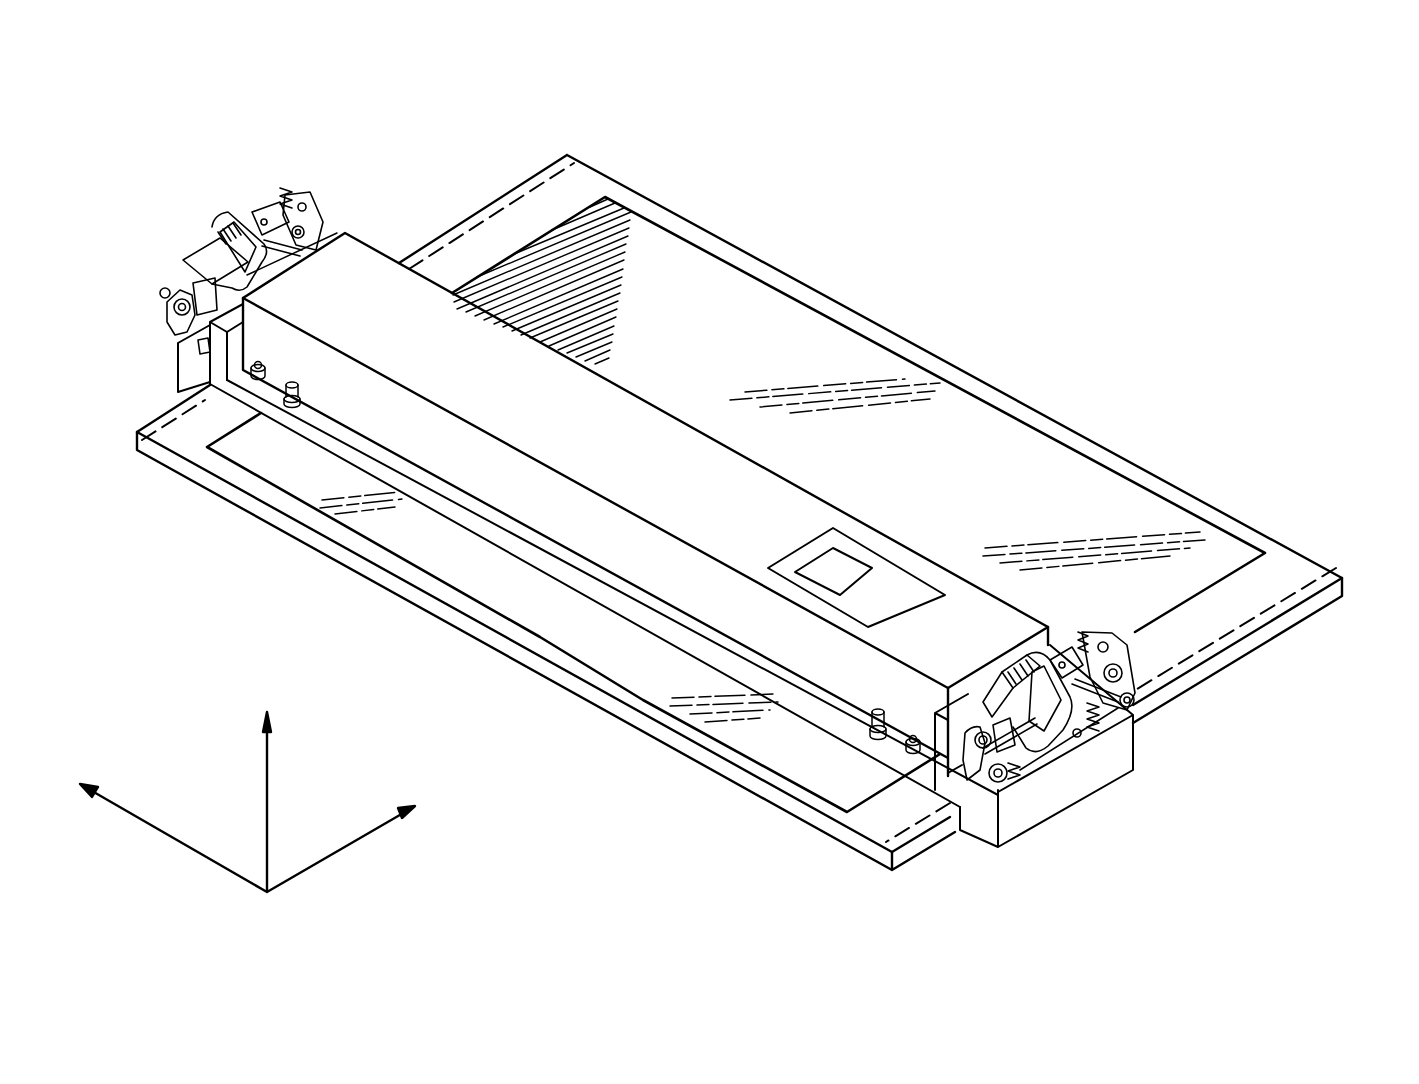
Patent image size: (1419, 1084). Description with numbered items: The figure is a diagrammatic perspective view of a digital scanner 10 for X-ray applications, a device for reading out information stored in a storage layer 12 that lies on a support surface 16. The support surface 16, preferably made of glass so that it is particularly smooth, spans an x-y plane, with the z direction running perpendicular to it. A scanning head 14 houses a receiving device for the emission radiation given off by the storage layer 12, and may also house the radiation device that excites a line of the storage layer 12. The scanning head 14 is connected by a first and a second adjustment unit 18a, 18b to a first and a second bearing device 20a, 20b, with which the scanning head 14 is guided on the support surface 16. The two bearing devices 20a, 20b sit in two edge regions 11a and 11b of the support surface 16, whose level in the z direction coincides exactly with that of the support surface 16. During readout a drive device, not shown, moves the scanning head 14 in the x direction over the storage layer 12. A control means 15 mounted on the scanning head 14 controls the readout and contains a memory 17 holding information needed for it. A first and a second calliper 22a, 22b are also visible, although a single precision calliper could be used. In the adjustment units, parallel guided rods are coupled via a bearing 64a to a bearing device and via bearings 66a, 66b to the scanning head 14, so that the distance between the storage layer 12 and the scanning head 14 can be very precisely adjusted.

The digital scanner 10 is at (292, 115).
The first edge region 11a is at (475, 215).
The second edge region 11b is at (1300, 591).
The storage layer 12 is at (725, 283).
The scanning head 14 is at (650, 432).
The control means 15 is at (900, 590).
The support surface 16 is at (585, 178).
The memory 17 is at (833, 567).
The first adjustment unit 18a is at (213, 232).
The second adjustment unit 18b is at (1100, 772).
The first bearing device 20a is at (188, 366).
The second bearing device 20b is at (1045, 803).
The first calliper 22a is at (292, 412).
The second calliper 22b is at (880, 742).
The bearing 64a is at (1132, 712).
The bearing 66a is at (1130, 668).
The bearing 66b is at (968, 775).